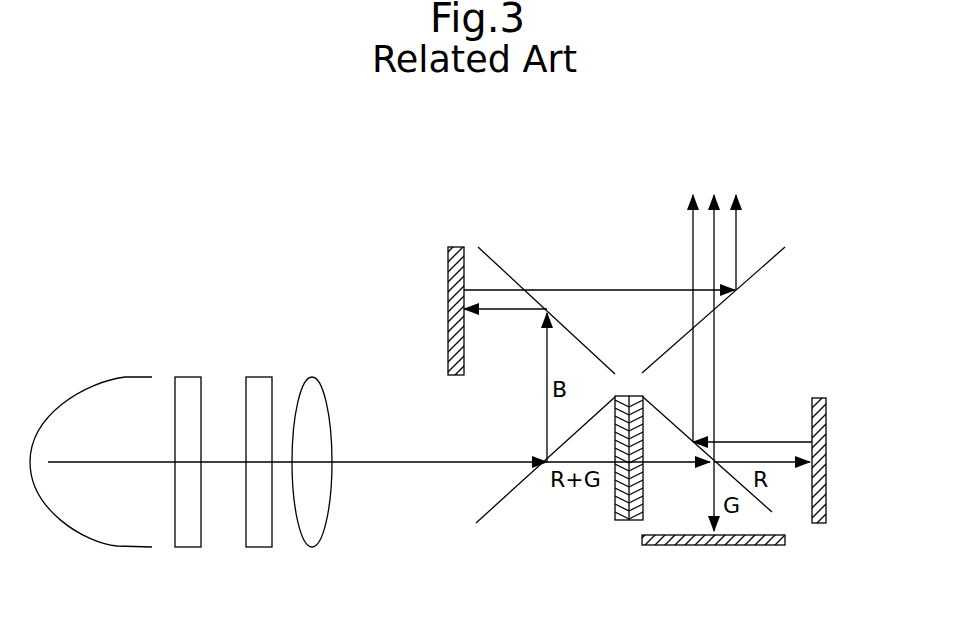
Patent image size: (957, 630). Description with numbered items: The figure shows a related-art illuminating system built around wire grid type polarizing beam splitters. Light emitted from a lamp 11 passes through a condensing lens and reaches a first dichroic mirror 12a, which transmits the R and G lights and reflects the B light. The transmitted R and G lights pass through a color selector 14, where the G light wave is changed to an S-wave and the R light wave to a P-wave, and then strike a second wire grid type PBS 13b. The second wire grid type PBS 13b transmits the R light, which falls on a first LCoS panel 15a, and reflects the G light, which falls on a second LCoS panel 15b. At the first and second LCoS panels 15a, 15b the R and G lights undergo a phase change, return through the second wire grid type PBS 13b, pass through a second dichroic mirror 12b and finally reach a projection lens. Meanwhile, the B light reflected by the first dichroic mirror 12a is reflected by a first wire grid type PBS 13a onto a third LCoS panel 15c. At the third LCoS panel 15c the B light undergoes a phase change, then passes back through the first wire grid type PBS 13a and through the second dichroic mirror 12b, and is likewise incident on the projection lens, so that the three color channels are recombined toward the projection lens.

The lamp 11 is at (125, 377).
The first dichroic mirror 12a is at (498, 503).
The second dichroic mirror 12b is at (768, 262).
The first wire grid type PBS 13a is at (518, 285).
The second wire grid type PBS 13b is at (775, 513).
The color selector 14 is at (620, 522).
The first LCoS panel 15a is at (826, 437).
The second LCoS panel 15b is at (745, 547).
The third LCoS panel 15c is at (448, 275).